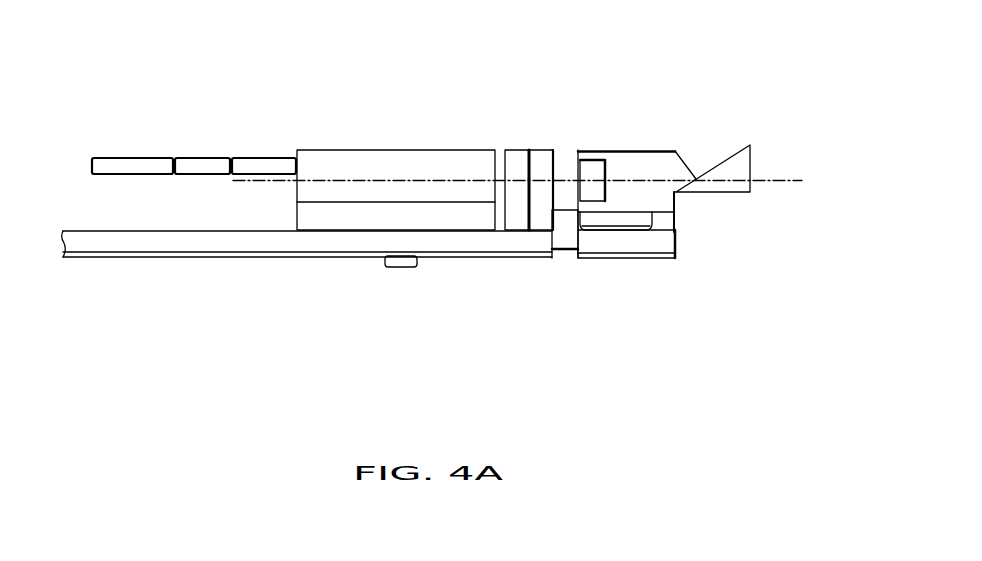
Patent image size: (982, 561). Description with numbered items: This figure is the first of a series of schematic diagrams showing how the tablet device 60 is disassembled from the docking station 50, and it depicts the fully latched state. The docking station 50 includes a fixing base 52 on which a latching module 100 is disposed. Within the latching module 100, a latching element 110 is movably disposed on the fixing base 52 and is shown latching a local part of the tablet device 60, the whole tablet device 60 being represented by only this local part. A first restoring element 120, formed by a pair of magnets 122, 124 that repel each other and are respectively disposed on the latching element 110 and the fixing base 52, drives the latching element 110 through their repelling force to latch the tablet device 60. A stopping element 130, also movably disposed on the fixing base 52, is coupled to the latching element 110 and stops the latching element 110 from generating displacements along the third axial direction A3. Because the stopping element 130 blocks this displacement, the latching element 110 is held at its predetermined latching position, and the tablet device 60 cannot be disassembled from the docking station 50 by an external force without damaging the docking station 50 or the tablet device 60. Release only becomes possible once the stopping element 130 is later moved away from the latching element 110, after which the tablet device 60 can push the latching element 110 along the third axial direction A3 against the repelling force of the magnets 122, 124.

The latching module 100 is at (445, 170).
The latching element 110 is at (658, 165).
The first restoring element 120 is at (561, 147).
The magnet 122 is at (599, 152).
The magnet 124 is at (542, 165).
The stopping element 130 is at (567, 220).
The docking station 50 is at (453, 300).
The fixing base 52 is at (640, 245).
The tablet device 60 is at (728, 167).
The third axial direction A3 is at (776, 183).